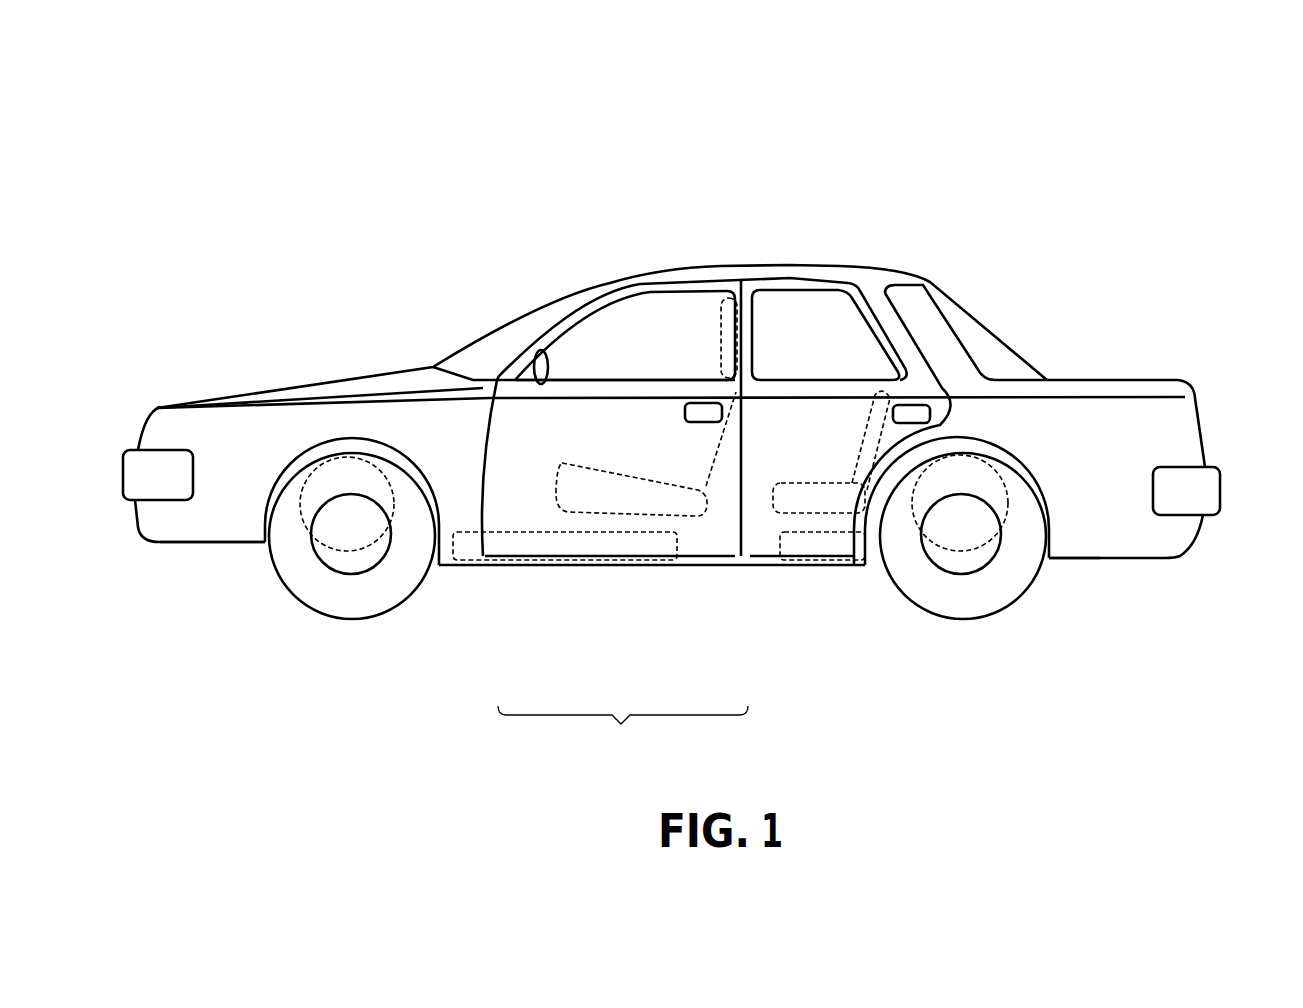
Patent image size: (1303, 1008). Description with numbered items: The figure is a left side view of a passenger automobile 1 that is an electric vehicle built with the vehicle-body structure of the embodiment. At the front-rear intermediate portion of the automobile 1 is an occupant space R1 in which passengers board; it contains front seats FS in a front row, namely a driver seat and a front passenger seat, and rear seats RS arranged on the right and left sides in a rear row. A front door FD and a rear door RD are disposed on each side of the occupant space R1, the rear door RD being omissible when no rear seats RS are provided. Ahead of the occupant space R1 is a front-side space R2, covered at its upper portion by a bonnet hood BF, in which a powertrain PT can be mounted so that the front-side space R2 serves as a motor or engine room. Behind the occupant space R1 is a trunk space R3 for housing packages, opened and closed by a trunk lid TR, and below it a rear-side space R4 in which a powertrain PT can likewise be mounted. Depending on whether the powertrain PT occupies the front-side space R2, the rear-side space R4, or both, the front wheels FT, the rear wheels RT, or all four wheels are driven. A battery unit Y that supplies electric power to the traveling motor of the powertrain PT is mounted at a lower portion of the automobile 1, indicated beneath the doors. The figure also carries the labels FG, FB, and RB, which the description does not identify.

The automobile 1 is at (612, 206).
The bonnet hood BF is at (302, 392).
The front glass (windshield) FG is at (492, 337).
The front door FD is at (575, 415).
The rear door RD is at (817, 433).
The front seats FS is at (680, 478).
The rear seats RS is at (856, 450).
The occupant space R1 is at (687, 307).
The front-side space R2 is at (405, 445).
The trunk space R3 is at (1087, 435).
The rear-side space R4 is at (1012, 570).
The trunk lid TR is at (1140, 375).
The powertrain PT is at (310, 517).
The front wheels FT is at (317, 614).
The rear wheels RT is at (933, 616).
The front side sill portion FB is at (450, 572).
The rear side sill portion RB is at (752, 567).
The battery unit Y is at (623, 734).